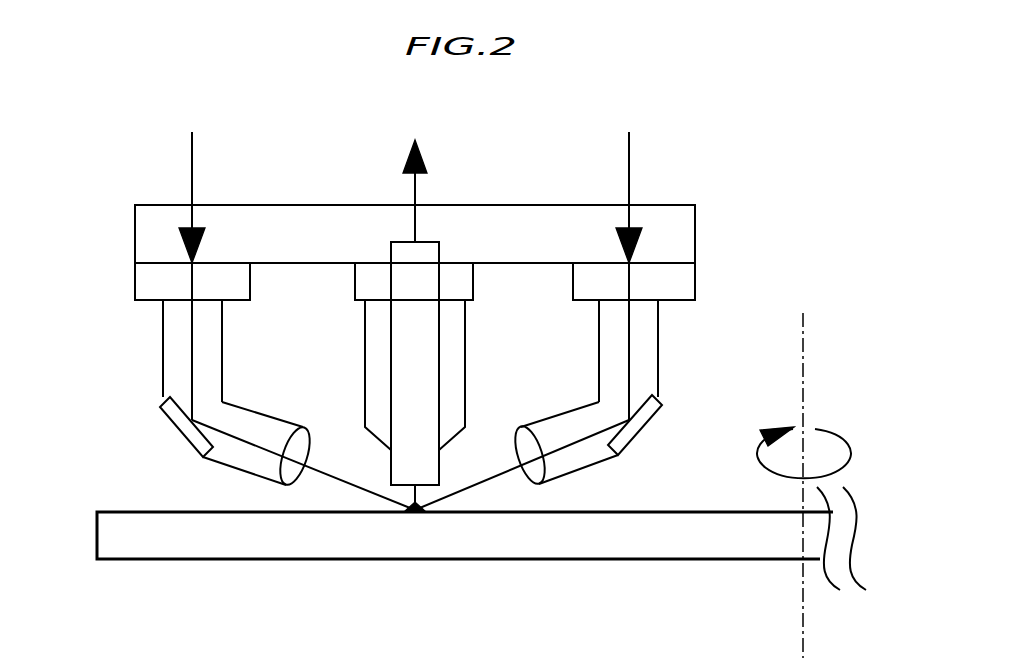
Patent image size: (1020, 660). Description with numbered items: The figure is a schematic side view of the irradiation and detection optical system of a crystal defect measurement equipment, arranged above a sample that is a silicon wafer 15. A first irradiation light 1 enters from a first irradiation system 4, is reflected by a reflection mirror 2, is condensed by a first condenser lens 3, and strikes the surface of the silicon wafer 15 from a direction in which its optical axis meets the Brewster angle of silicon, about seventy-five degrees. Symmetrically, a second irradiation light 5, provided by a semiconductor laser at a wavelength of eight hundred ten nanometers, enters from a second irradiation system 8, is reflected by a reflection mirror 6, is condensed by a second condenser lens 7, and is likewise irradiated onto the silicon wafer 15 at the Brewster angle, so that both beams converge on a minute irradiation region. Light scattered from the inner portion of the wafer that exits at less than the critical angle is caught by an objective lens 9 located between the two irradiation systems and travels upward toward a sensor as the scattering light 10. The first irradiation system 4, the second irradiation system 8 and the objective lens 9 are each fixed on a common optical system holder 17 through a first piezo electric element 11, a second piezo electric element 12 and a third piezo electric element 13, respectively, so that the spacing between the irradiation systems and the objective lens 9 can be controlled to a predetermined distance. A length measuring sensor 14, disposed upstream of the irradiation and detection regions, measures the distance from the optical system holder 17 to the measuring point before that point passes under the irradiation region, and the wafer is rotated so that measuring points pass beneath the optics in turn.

The first irradiation light 1 is at (190, 143).
The reflection mirror 2 is at (170, 428).
The first condenser lens 3 is at (282, 485).
The first irradiation system 4 is at (163, 372).
The second irradiation light 5 is at (632, 135).
The reflection mirror 6 is at (653, 423).
The second condenser lens 7 is at (543, 482).
The second irradiation system 8 is at (660, 362).
The objective lens 9 is at (465, 348).
The scattering light 10 is at (418, 135).
The first piezo electric element 11 is at (135, 290).
The second piezo electric element 12 is at (697, 290).
The third piezo electric element 13 is at (457, 280).
The length measuring sensor 14 is at (390, 253).
The silicon wafer 15 is at (137, 562).
The optical system holder 17 is at (372, 205).